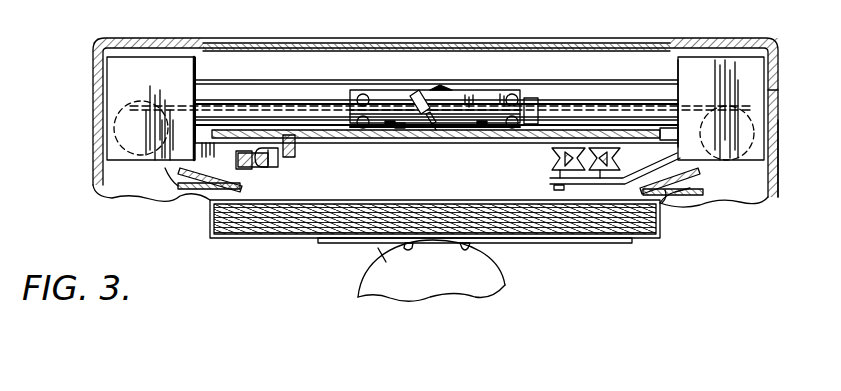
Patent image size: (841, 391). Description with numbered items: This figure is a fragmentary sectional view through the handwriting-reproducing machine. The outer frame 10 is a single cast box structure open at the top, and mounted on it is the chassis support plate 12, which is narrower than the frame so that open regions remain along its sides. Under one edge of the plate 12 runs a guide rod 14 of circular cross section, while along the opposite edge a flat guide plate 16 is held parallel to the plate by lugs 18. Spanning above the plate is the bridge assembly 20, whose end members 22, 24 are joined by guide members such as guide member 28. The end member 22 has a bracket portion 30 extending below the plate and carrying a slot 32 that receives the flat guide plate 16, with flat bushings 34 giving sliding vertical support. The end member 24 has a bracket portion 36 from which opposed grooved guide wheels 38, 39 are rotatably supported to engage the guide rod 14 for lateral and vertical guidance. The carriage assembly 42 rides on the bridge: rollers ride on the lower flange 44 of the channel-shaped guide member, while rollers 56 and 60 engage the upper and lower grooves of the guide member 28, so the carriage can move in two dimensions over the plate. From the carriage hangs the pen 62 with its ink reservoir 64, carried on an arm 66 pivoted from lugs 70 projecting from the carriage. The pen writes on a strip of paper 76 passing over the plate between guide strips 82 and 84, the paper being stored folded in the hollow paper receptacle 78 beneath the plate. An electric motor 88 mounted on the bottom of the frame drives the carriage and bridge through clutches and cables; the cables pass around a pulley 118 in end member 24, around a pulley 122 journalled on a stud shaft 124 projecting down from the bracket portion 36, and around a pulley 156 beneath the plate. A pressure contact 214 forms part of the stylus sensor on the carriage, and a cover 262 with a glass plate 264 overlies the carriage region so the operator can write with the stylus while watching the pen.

The outer frame 10 is at (778, 180).
The chassis support plate 12 is at (424, 130).
The guide rod 14 is at (550, 180).
The flat guide plate 16 is at (290, 162).
The lug 18 is at (295, 150).
The bridge assembly 20 is at (572, 84).
The end member 22 is at (128, 68).
The end member 24 is at (750, 70).
The guide member 28 is at (536, 98).
The bracket portion 30 is at (200, 155).
The slot 32 is at (244, 168).
The flat bushing 34 is at (300, 146).
The bracket portion 36 is at (633, 178).
The grooved guide wheel 38 is at (552, 158).
The grooved guide wheel 39 is at (590, 200).
The carriage assembly 42 is at (392, 92).
The lower flange 44 is at (630, 120).
The roller 56 is at (363, 94).
The roller 60 is at (356, 120).
The pen 62 is at (434, 128).
The ink reservoir 64 is at (414, 90).
The arm 66 is at (430, 135).
The lug 70 is at (482, 120).
The strip of paper 76 is at (544, 135).
The paper receptacle 78 is at (637, 240).
The guide strip 82 is at (214, 126).
The guide strip 84 is at (655, 132).
The electric motor 88 is at (490, 270).
The pulley 118 is at (727, 110).
The pulley 122 is at (692, 183).
The stud shaft 124 is at (650, 184).
The pulley 156 is at (668, 196).
The pressure contact 214 is at (440, 85).
The cover 262 is at (782, 87).
The glass plate 264 is at (288, 46).